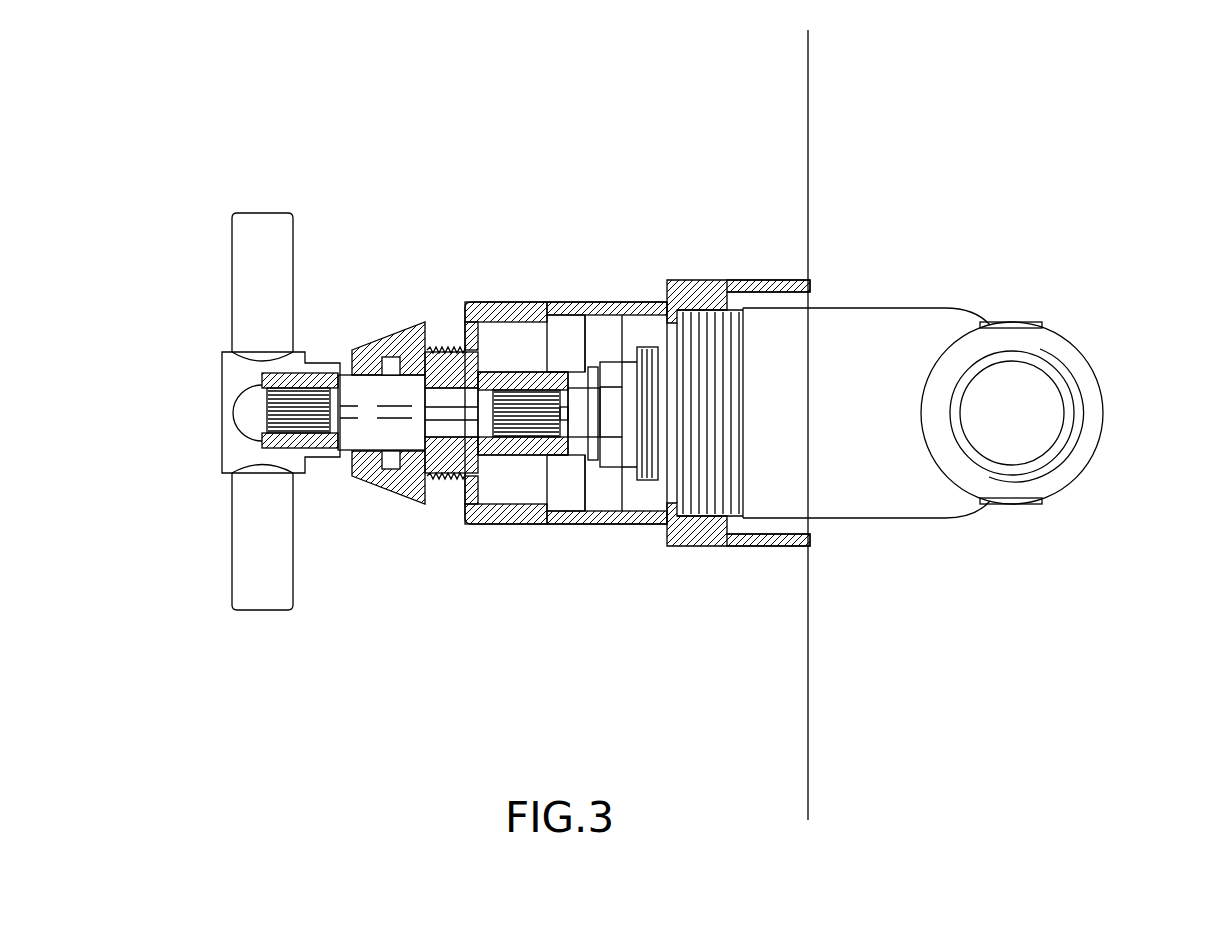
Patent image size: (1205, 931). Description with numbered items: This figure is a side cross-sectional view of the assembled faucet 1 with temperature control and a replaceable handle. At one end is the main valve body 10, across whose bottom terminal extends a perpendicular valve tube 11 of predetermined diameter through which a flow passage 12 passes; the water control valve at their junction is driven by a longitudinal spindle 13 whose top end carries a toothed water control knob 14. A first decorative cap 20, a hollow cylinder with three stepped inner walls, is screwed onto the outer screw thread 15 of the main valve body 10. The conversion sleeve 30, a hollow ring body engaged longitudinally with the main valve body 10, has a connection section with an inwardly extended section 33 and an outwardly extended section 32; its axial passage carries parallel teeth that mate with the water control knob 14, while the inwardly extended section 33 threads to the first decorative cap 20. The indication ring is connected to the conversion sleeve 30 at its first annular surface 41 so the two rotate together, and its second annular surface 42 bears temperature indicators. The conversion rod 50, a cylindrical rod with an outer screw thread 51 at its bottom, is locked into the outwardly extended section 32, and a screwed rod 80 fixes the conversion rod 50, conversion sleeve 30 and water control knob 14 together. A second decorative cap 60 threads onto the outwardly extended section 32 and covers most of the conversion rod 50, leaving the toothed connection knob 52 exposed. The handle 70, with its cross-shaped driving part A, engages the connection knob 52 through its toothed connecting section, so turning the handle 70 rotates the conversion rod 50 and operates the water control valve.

The faucet 1 is at (498, 140).
The cross-shaped driving part A is at (240, 288).
The handle 70 is at (228, 382).
The connection knob 52 is at (297, 407).
The screwed rod 80 is at (360, 413).
The second decorative cap 60 is at (387, 478).
The outer screw thread 51 is at (432, 322).
The outwardly extended section 32 is at (450, 323).
The conversion sleeve 30 is at (516, 313).
The inwardly extended section 33 is at (533, 375).
The water control knob 14 is at (532, 440).
The spindle 13 is at (562, 455).
The conversion rod 50 is at (546, 412).
The first annular surface 41 is at (600, 317).
The second annular surface 42 is at (647, 304).
The first decorative cap 20 is at (707, 290).
The outer screw thread 15 is at (725, 343).
The main valve body 10 is at (867, 323).
The valve tube 11 is at (1008, 333).
The flow passage 12 is at (1037, 400).